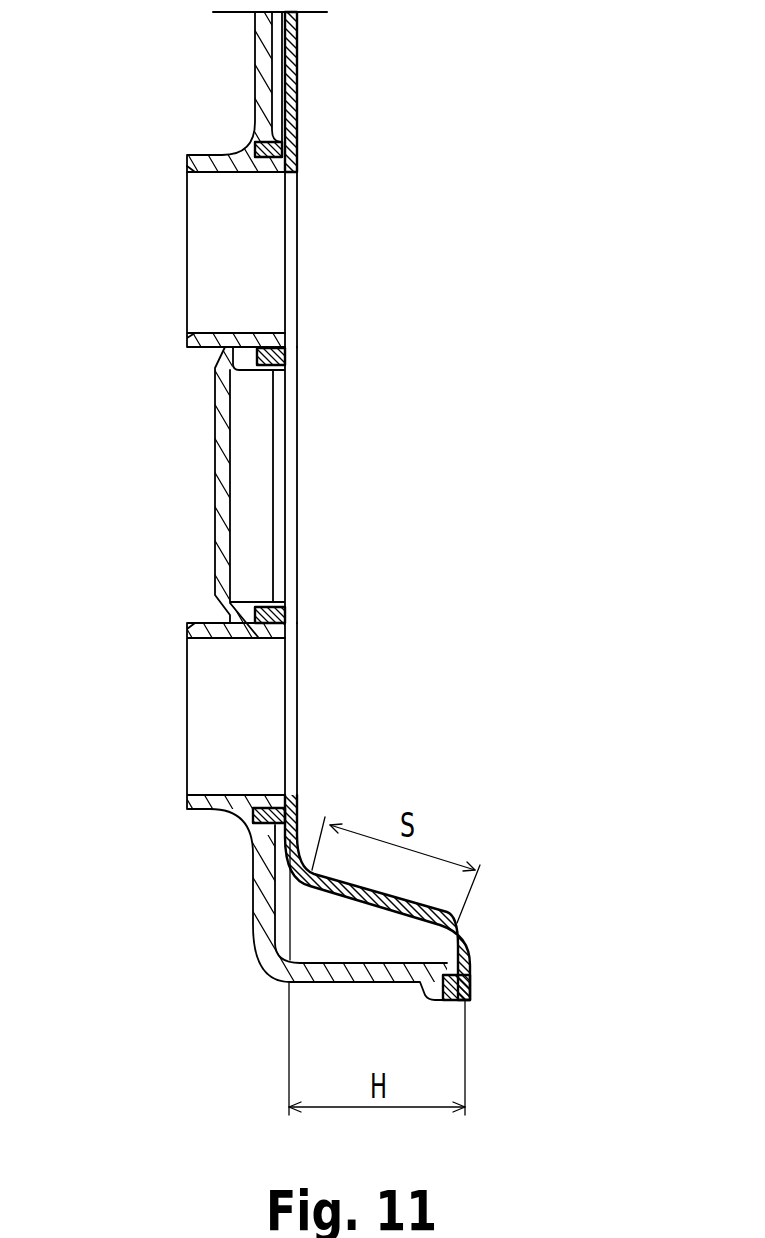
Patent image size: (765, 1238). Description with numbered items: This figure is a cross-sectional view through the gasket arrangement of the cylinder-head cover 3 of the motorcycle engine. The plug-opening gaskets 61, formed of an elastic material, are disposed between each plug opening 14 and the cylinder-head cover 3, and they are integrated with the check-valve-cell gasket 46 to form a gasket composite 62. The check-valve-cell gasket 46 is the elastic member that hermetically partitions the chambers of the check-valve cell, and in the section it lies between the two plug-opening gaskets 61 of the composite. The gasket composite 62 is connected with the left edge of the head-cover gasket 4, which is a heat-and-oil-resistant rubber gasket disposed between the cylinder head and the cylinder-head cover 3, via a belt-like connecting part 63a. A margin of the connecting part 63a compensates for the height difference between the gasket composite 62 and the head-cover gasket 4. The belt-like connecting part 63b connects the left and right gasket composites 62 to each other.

The cylinder-head cover 3 is at (204, 502).
The head-cover gasket 4 is at (472, 982).
The plug opening 14 is at (218, 172).
The check-valve-cell gasket 46 is at (287, 490).
The plug-opening gasket 61 is at (297, 290).
The gasket composite 62 is at (356, 483).
The connecting part 63a is at (377, 906).
The connecting part 63b is at (300, 70).